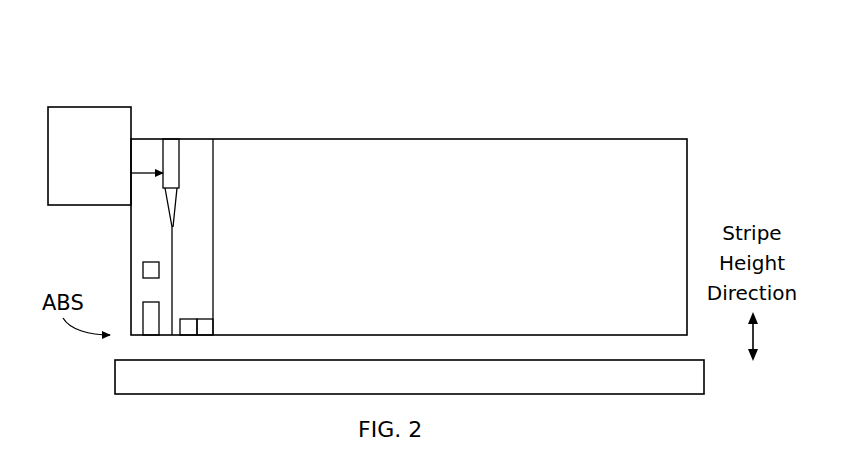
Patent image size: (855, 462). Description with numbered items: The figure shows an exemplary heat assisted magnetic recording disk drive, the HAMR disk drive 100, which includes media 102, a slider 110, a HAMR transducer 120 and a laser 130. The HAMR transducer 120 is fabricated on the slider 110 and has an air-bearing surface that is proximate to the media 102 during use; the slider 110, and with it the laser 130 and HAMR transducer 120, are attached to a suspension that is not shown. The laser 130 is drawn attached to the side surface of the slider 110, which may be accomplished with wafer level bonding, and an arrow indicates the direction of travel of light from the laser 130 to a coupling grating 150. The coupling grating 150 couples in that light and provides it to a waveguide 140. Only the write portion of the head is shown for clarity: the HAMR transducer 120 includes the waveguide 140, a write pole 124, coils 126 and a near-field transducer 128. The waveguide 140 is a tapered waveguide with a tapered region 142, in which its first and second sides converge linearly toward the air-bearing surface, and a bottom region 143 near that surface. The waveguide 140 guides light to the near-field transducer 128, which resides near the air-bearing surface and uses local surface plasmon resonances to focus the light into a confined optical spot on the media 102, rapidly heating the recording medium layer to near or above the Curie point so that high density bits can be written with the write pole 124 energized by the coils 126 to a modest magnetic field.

The HAMR disk drive 100 is at (414, 36).
The media 102 is at (115, 365).
The slider 110 is at (687, 203).
The HAMR transducer 120 is at (213, 270).
The write pole 124 is at (143, 302).
The coils 126 is at (143, 262).
The near-field transducer 128 is at (213, 317).
The laser 130 is at (80, 107).
The waveguide 140 is at (172, 248).
The tapered region 142 is at (185, 212).
The bottom region 143 is at (172, 338).
The coupling grating 150 is at (180, 154).